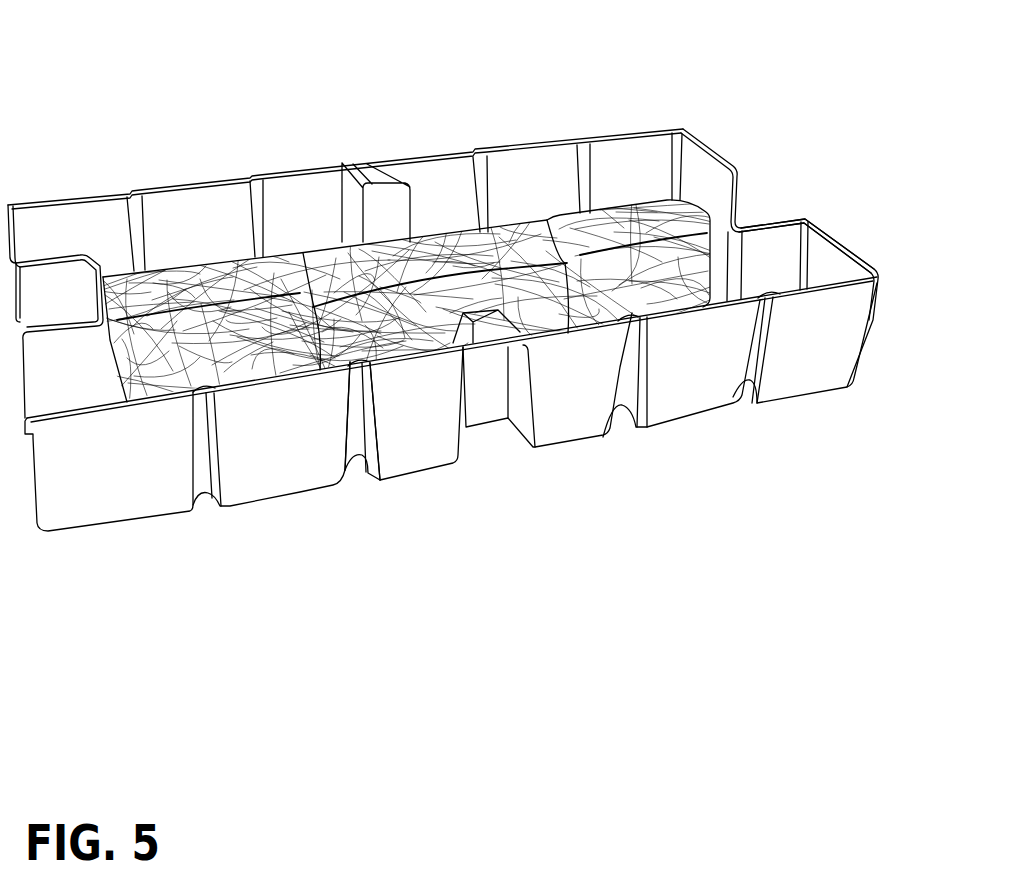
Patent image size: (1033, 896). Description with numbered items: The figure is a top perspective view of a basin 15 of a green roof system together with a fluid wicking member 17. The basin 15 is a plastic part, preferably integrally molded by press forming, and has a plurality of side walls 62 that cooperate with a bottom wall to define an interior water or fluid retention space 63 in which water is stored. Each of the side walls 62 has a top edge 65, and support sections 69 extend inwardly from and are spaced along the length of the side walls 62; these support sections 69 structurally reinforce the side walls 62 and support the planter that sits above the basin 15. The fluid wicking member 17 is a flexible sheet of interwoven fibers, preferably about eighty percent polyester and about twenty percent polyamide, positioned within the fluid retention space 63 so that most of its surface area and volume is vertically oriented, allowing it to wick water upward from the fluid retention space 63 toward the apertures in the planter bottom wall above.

The basin 15 is at (100, 185).
The side walls 62 is at (461, 352).
The fluid retention space 63 is at (295, 208).
The top edge 65 is at (827, 277).
The fluid wicking member 17 is at (240, 347).
The support section 69 is at (355, 425).